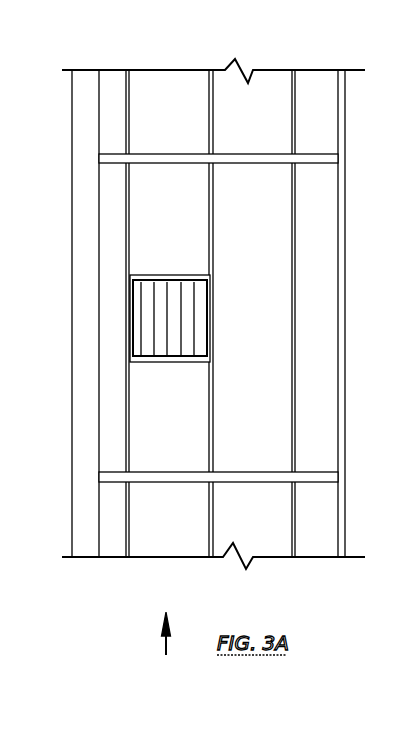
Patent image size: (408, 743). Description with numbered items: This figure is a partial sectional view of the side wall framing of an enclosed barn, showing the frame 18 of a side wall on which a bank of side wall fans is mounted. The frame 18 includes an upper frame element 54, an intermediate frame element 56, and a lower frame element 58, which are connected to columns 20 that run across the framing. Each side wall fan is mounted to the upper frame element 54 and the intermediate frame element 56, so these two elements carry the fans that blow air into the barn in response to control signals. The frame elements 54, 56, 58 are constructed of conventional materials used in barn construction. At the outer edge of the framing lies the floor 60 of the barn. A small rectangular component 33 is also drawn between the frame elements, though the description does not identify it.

The frame 18 is at (175, 681).
The columns 20 is at (164, 157).
The vent panel 33 is at (177, 358).
The upper frame element 54 is at (128, 85).
The intermediate frame element 56 is at (210, 83).
The lower frame element 58 is at (292, 88).
The floor 60 is at (338, 98).